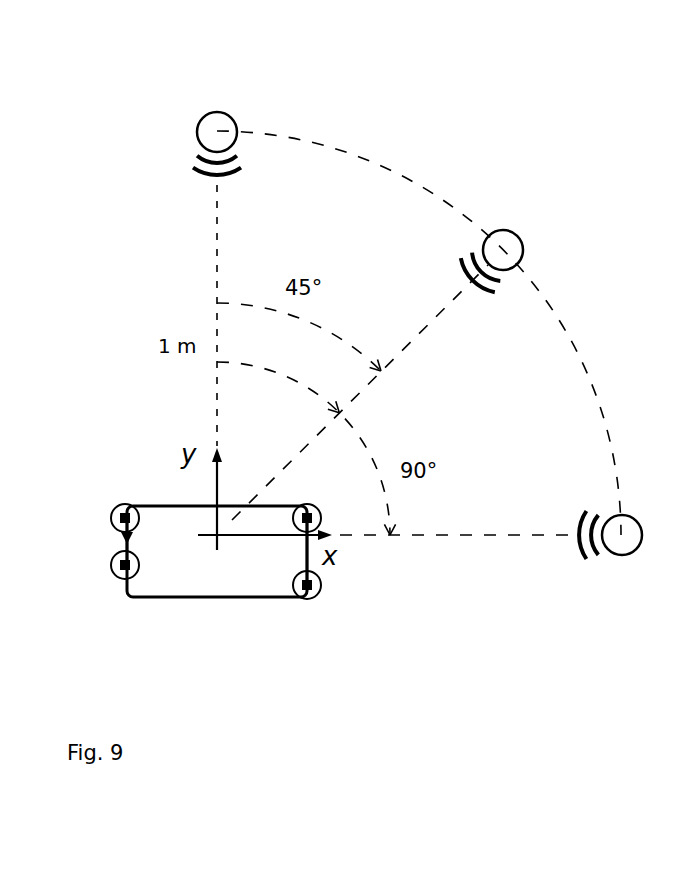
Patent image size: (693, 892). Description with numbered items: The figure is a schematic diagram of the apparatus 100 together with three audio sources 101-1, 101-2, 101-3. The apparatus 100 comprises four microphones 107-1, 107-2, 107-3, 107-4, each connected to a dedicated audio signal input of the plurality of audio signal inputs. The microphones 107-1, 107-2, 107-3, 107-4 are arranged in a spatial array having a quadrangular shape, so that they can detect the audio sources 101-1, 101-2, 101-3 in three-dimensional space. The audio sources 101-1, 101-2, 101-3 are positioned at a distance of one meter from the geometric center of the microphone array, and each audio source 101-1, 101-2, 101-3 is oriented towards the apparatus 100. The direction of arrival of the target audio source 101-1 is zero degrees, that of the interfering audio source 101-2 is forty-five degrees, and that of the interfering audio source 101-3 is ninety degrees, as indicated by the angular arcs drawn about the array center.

The apparatus 100 is at (157, 458).
The audio source 101-1 is at (201, 121).
The audio source 101-2 is at (523, 250).
The audio source 101-3 is at (616, 549).
The microphone 107-1 is at (115, 511).
The microphone 107-2 is at (311, 513).
The microphone 107-3 is at (301, 591).
The microphone 107-4 is at (116, 572).